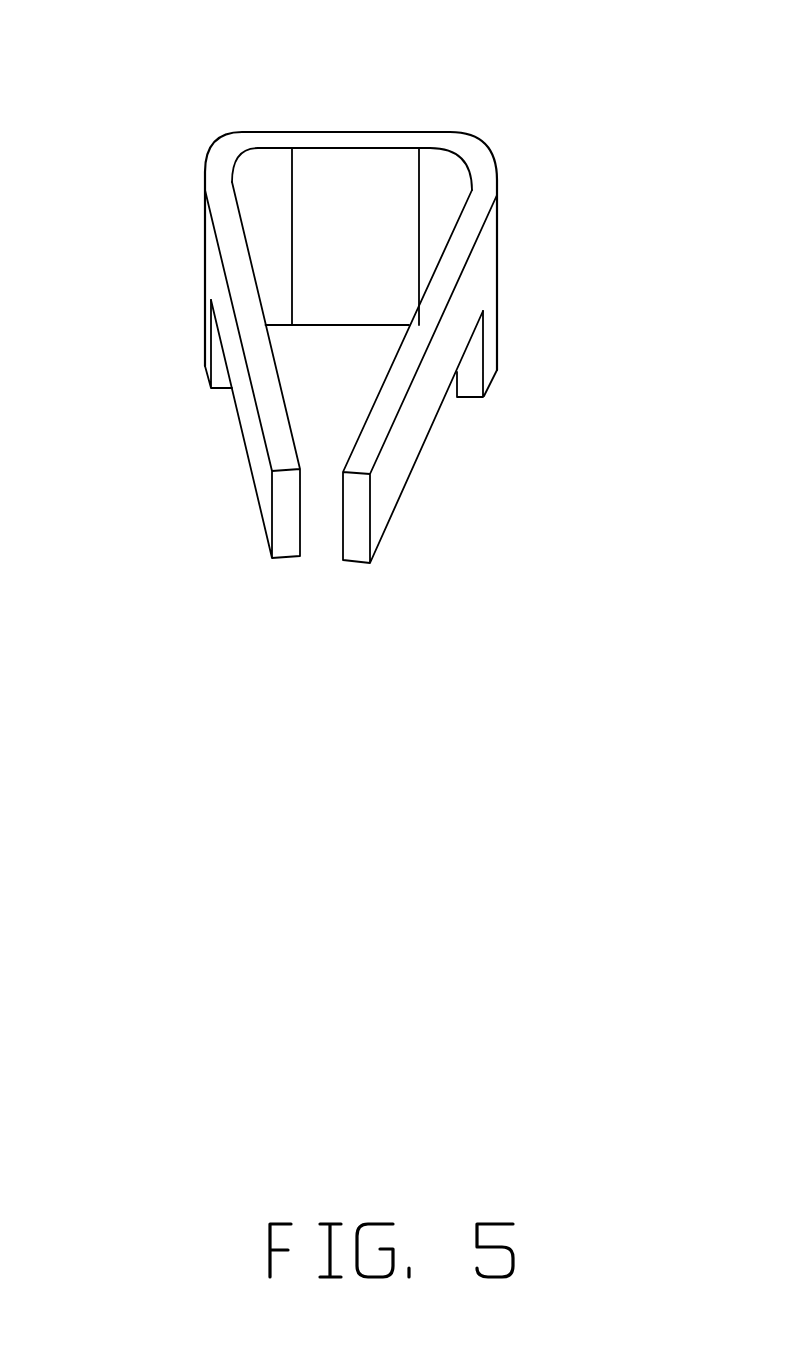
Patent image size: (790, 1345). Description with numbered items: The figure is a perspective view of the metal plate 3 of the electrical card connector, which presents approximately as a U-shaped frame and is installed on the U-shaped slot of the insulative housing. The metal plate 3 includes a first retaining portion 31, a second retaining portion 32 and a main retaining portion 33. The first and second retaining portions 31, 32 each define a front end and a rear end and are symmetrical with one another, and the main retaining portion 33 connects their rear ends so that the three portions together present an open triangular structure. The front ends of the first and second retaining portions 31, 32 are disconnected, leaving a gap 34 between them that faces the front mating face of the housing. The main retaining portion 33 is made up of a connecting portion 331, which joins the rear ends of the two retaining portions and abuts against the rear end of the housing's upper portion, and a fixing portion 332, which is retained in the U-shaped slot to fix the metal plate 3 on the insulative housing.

The metal plate 3 is at (372, 331).
The main retaining portion 33 is at (357, 165).
The connecting portion 331 is at (500, 249).
The fixing portion 332 is at (468, 370).
The first retaining portion 31 is at (245, 410).
The second retaining portion 32 is at (407, 425).
The gap 34 is at (327, 508).